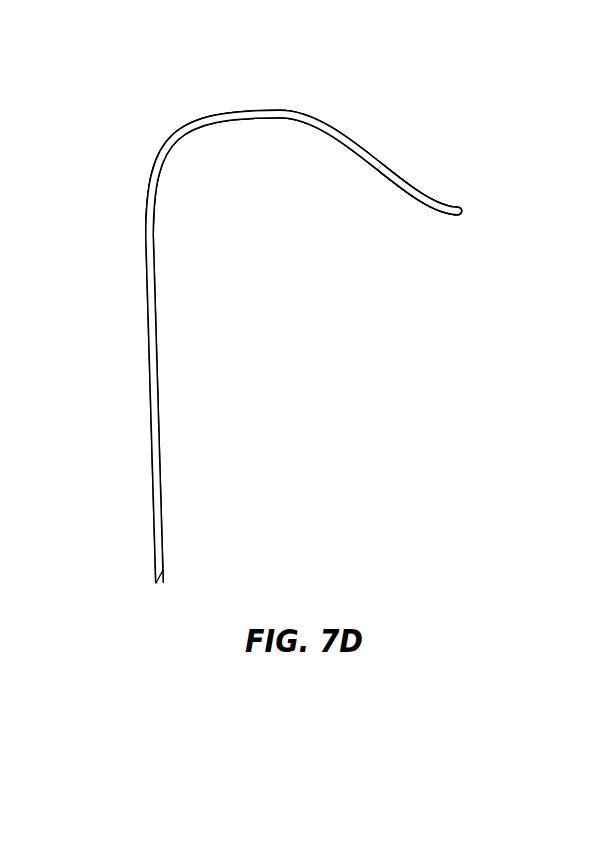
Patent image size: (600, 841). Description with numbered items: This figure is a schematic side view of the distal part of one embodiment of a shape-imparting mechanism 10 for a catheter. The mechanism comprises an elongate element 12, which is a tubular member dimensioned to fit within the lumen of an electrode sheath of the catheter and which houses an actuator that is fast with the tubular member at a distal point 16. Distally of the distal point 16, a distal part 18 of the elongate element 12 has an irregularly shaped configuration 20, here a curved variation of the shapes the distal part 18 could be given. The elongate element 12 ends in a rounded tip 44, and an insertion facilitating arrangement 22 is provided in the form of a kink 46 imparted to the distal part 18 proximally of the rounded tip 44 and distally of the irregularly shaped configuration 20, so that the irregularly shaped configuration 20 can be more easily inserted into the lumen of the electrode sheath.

The shape-imparting mechanism 10 is at (101, 286).
The elongate element 12 is at (159, 433).
The distal point 16 is at (154, 210).
The distal part 18 is at (242, 75).
The irregularly shaped configuration 20 is at (332, 137).
The insertion facilitating arrangement 22 is at (430, 237).
The rounded tip 44 is at (462, 212).
The kink 46 is at (447, 207).